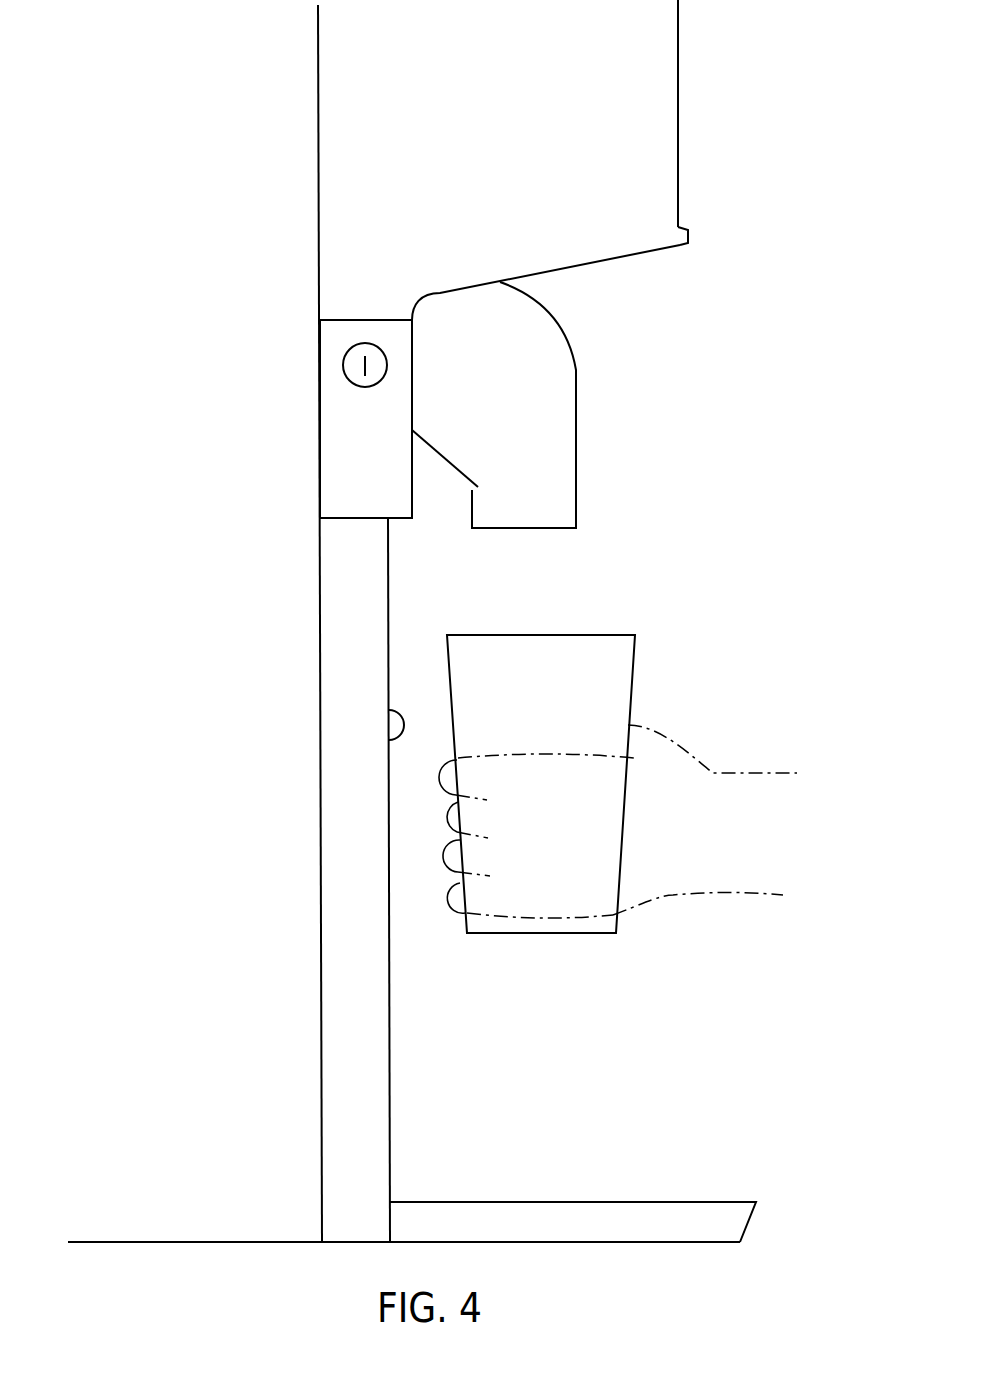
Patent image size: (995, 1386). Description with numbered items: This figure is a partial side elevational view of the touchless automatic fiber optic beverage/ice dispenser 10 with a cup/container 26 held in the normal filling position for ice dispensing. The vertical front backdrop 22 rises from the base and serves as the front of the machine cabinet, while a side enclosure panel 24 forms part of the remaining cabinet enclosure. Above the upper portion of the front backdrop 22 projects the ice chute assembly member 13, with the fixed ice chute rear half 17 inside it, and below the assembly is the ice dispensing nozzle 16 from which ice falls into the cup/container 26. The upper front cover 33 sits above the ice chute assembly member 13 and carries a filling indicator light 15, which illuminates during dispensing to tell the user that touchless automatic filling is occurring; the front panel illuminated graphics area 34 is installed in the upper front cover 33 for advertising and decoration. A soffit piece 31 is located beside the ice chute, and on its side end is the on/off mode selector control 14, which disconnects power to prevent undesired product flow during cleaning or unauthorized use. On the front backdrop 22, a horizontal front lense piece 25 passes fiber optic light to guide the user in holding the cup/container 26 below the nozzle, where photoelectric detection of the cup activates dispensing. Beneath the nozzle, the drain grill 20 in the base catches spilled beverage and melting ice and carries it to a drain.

The touchless automatic fiber optic beverage/ice dispenser 10 is at (603, 623).
The ice chute assembly member 13 is at (576, 470).
The on/off mode selector control 14 is at (365, 387).
The filling indicator light 15 is at (683, 224).
The ice dispensing nozzle 16 is at (540, 528).
The fixed ice chute rear half 17 is at (440, 454).
The drain grill 20 is at (703, 1198).
The front backdrop 22 is at (391, 1097).
The side enclosure panel 24 is at (203, 1226).
The horizontal front lense piece 25 is at (396, 712).
The cup/container 26 is at (588, 933).
The soffit piece 31 is at (401, 518).
The upper front cover 33 is at (632, 256).
The front panel illuminated graphics area 34 is at (678, 64).